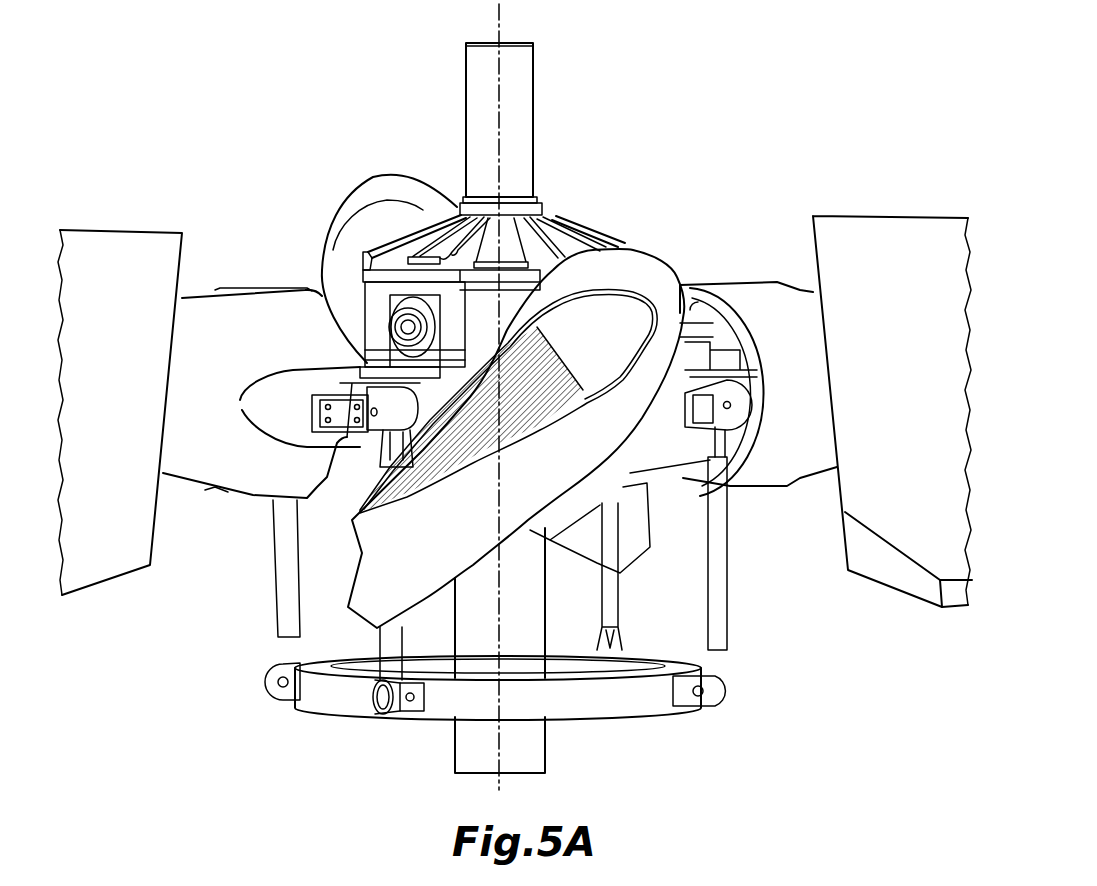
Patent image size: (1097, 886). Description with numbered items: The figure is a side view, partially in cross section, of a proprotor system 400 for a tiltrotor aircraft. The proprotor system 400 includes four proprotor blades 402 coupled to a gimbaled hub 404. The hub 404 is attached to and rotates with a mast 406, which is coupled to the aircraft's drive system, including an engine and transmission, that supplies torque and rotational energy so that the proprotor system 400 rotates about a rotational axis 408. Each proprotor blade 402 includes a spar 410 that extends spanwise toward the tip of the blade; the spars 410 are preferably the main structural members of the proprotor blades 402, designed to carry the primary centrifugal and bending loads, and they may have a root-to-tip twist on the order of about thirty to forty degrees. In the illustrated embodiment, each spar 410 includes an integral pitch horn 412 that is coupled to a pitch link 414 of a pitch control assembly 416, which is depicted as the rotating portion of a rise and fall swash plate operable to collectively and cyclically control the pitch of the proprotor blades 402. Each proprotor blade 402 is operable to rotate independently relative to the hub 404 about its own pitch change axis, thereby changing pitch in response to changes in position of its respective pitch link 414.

The proprotor system 400 is at (727, 98).
The proprotor blade 402 is at (653, 263).
The gimbaled hub 404 is at (607, 217).
The mast 406 is at (468, 130).
The rotational axis 408 is at (497, 32).
The spar 410 is at (250, 340).
The integral pitch horn 412 is at (270, 415).
The pitch link 414 is at (342, 420).
The pitch control assembly 416 is at (330, 716).